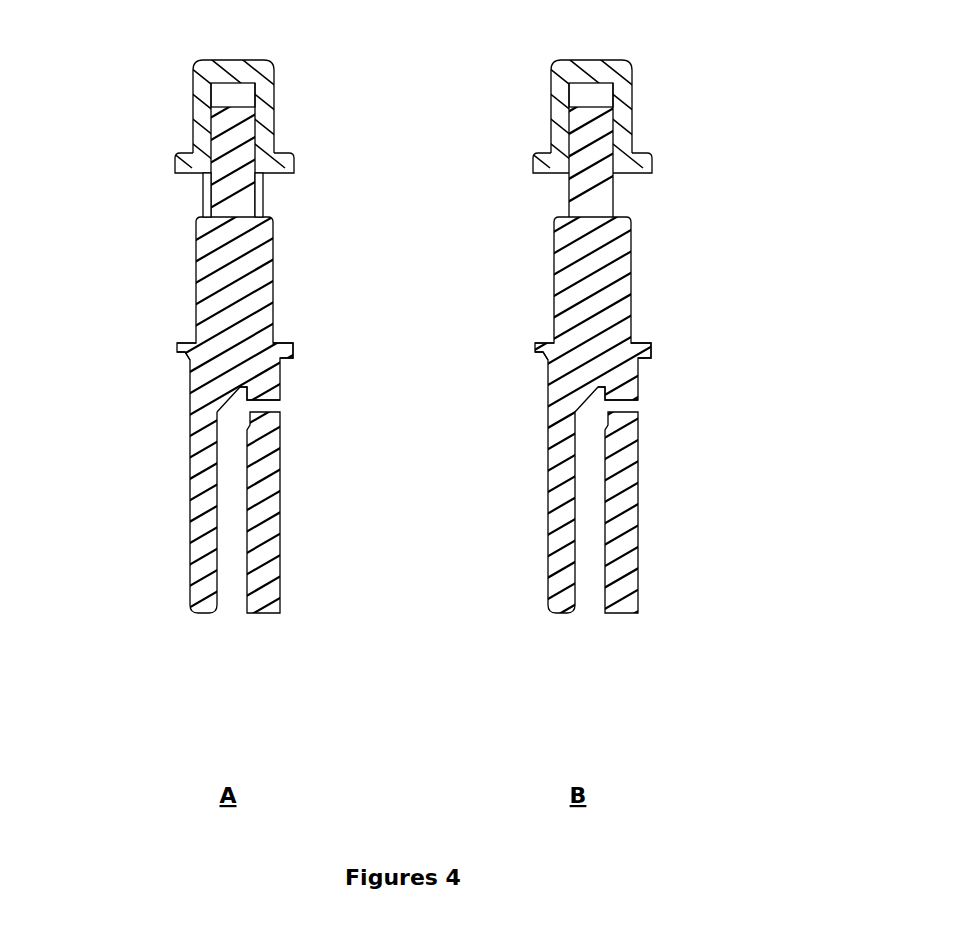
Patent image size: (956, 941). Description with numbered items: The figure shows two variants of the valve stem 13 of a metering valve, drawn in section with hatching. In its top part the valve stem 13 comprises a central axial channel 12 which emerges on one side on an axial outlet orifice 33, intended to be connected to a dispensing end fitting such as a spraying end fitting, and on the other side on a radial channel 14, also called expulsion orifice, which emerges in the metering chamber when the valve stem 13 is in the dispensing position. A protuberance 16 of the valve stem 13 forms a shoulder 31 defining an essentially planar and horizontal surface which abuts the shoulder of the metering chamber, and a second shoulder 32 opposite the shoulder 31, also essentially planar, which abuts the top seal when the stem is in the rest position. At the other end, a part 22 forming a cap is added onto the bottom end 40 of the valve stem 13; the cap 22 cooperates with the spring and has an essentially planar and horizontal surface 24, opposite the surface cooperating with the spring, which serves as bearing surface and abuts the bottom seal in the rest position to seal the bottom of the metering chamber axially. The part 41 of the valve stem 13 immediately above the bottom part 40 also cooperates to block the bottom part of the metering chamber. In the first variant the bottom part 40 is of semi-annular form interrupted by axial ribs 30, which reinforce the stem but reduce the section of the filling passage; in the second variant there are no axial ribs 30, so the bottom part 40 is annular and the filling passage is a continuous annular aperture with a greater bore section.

In FIG. 4A, the central axial channel 12 is at (223, 537).
In FIG. 4B, the central axial channel 12 is at (527, 512).
In FIG. 4A, the valve stem 13 is at (272, 533).
In FIG. 4B, the valve stem 13 is at (674, 512).
In FIG. 4A, the radial channel 14 is at (283, 402).
In FIG. 4B, the radial channel 14 is at (678, 425).
In FIG. 4A, the protuberance 16 is at (285, 352).
In FIG. 4B, the protuberance 16 is at (695, 347).
In FIG. 4A, the cap 22 is at (265, 115).
In FIG. 4B, the cap 22 is at (578, 104).
In FIG. 4A, the planar surface 24 is at (275, 173).
In FIG. 4B, the planar surface 24 is at (646, 200).
In FIG. 4A, the axial ribs 30 is at (204, 197).
In FIG. 4A, the shoulder 31 is at (188, 335).
In FIG. 4B, the shoulder 31 is at (497, 304).
In FIG. 4A, the second shoulder 32 is at (188, 366).
In FIG. 4B, the second shoulder 32 is at (494, 389).
In FIG. 4A, the axial outlet orifice 33 is at (240, 593).
In FIG. 4B, the axial outlet orifice 33 is at (588, 637).
In FIG. 4A, the bottom part of the valve stem 40 is at (225, 140).
In FIG. 4B, the bottom part of the valve stem 40 is at (562, 120).
In FIG. 4A, the part of the valve stem immediately above the bottom part 41 is at (248, 282).
In FIG. 4B, the part of the valve stem immediately above the bottom part 41 is at (616, 402).